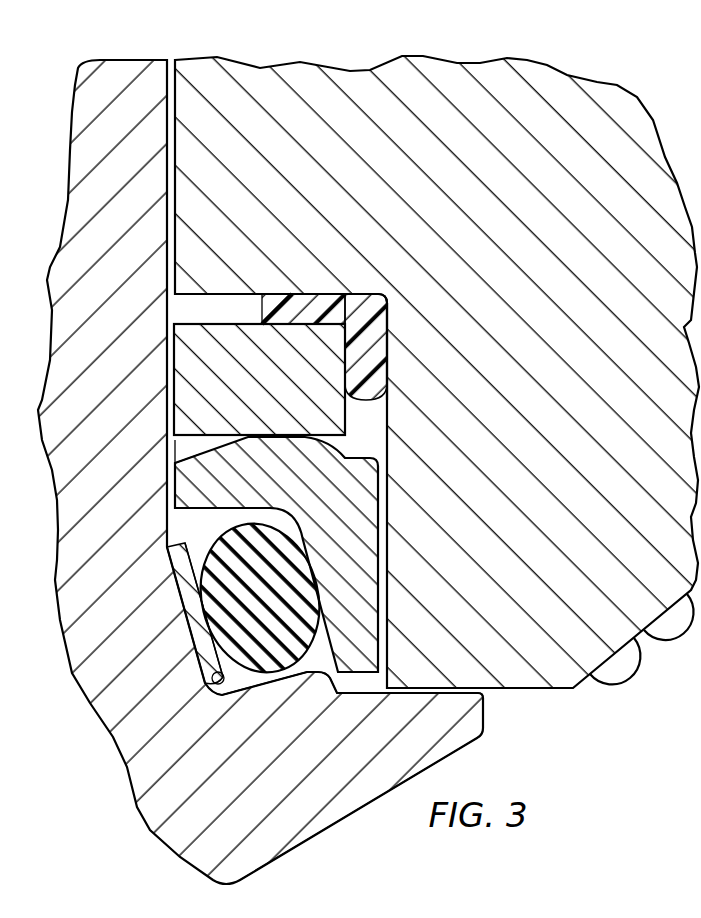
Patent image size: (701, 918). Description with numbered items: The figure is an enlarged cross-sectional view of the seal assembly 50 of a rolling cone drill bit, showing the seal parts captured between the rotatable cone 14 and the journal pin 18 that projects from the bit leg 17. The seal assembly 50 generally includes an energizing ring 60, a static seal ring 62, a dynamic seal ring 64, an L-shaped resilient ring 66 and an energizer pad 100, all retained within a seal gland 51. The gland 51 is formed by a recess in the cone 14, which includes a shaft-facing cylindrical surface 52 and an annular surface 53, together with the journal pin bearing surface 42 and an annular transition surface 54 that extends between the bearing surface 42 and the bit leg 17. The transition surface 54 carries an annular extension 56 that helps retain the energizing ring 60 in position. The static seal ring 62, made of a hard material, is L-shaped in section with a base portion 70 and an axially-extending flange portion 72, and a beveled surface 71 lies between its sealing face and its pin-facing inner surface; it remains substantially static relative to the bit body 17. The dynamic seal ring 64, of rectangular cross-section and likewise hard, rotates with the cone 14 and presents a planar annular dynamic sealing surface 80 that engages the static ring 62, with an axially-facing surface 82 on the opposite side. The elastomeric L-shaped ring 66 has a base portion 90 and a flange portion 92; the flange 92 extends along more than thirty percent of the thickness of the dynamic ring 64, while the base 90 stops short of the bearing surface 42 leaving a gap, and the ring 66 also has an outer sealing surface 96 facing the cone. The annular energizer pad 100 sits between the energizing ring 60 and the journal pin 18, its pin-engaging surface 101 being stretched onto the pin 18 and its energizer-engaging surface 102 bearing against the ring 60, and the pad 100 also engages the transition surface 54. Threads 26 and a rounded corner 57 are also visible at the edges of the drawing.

The cone 14 is at (516, 392).
The bit body / bit leg 17 is at (338, 805).
The journal pin / bearing pin 18 is at (72, 120).
The threads 26 is at (673, 637).
The journal pin bearing surface 42 is at (172, 88).
The seal assembly 50 is at (272, 690).
The seal gland 51 is at (167, 517).
The shaft-facing cylindrical surface 52 is at (380, 424).
The annular surface 53 is at (200, 300).
The annular transition surface 54 is at (214, 682).
The annular extension 56 is at (312, 687).
The rounded corner 57 is at (391, 294).
The energizing ring 60 is at (249, 525).
The static seal ring 62 is at (368, 564).
The dynamic seal ring 64 is at (317, 373).
The L-shaped resilient ring 66 is at (324, 294).
The base portion 70 is at (168, 492).
The beveled surface 71 is at (170, 447).
The axially-extending flange portion 72 is at (368, 640).
The dynamic sealing surface 80 is at (248, 433).
The axially-facing surface 82 is at (167, 318).
The base portion 90 is at (273, 297).
The axially-extending flange portion 92 is at (380, 352).
The outer sealing surface 96 is at (388, 372).
The energizer pad 100 is at (177, 596).
The pin-engaging surface 101 is at (180, 628).
The energizer-engaging surface 102 is at (228, 690).